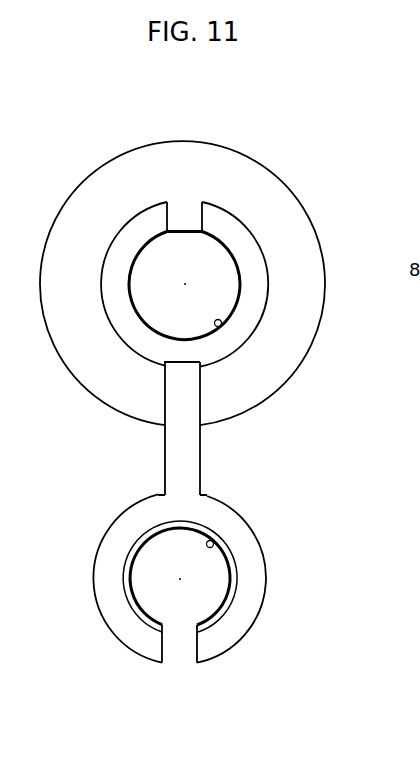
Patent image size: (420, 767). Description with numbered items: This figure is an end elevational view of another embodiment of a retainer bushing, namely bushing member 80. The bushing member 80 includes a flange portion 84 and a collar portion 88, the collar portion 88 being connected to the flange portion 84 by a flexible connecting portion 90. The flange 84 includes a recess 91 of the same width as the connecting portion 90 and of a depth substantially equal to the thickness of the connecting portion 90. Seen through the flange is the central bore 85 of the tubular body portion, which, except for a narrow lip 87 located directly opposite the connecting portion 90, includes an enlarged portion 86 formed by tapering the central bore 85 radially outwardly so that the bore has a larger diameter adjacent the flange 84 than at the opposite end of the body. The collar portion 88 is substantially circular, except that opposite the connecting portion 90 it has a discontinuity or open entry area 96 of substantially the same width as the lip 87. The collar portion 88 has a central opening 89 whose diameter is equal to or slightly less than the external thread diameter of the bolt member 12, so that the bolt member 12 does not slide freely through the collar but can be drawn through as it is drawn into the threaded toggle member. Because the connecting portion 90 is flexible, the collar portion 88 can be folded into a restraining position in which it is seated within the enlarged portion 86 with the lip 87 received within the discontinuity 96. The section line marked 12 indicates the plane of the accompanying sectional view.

The bolt member 12 is at (186, 165).
The bushing member 80 is at (110, 136).
The flange portion 84 is at (283, 196).
The central bore 85 is at (222, 328).
The enlarged portion 86 is at (243, 326).
The lip 87 is at (182, 207).
The collar portion 88 is at (244, 541).
The central opening 89 is at (213, 542).
The connecting portion 90 is at (190, 470).
The recess 91 is at (187, 412).
The open entry area 96 is at (164, 658).